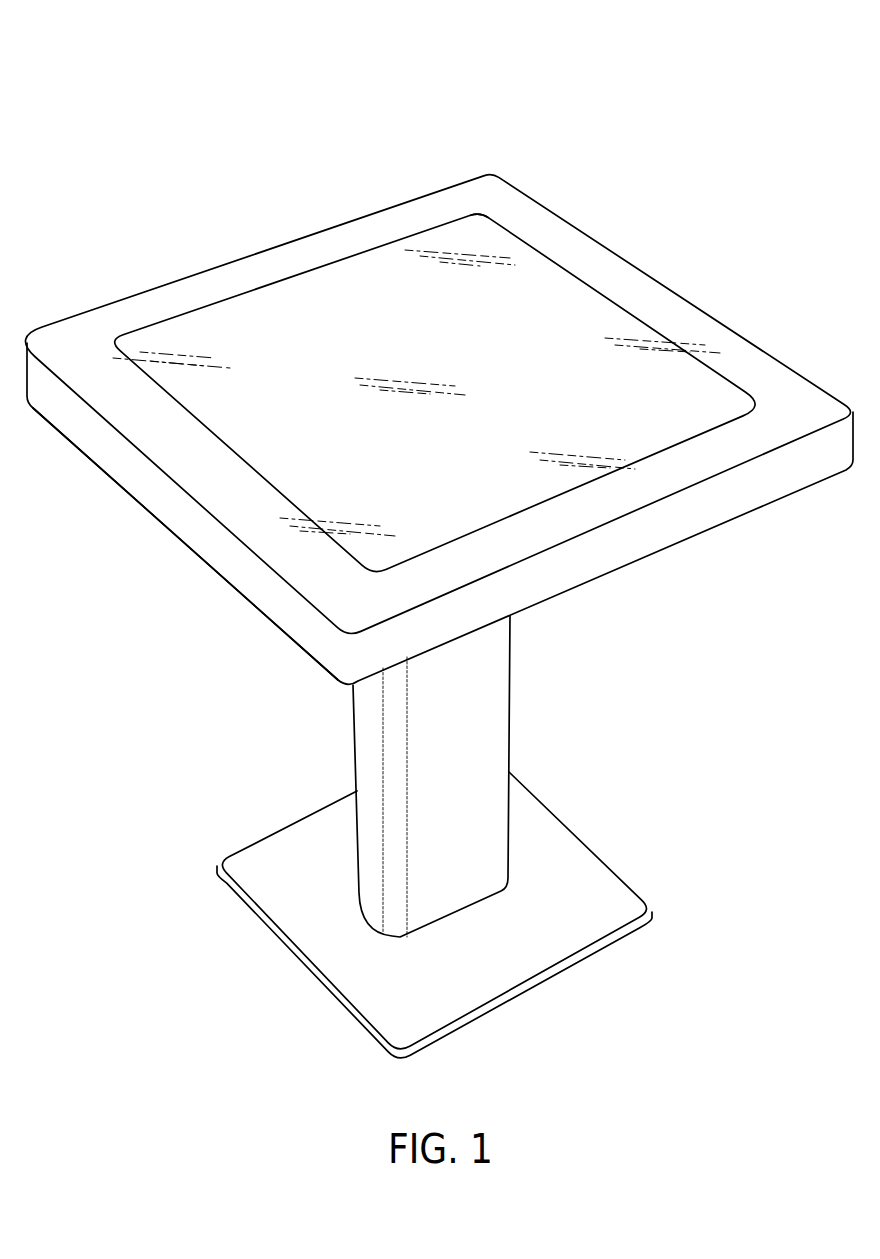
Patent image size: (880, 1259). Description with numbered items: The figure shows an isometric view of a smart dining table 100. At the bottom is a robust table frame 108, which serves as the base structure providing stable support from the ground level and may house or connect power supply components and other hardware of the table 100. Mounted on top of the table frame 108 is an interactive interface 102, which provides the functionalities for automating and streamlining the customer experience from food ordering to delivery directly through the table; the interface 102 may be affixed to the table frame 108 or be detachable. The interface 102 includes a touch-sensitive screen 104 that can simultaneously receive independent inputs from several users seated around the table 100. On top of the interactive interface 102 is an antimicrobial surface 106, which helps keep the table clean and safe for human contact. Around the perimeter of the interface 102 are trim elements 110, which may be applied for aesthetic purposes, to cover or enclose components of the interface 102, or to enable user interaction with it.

The smart dining table 100 is at (700, 55).
The interactive interface 102 is at (800, 403).
The touch-sensitive screen 104 is at (328, 435).
The antimicrobial surface 106 is at (451, 248).
The table frame 108 is at (488, 693).
The trim elements 110 is at (267, 592).